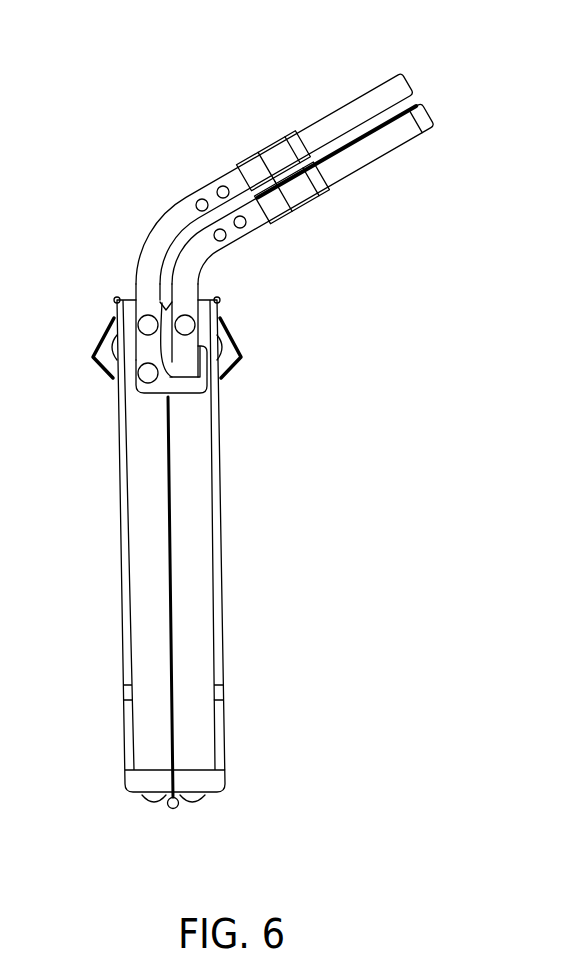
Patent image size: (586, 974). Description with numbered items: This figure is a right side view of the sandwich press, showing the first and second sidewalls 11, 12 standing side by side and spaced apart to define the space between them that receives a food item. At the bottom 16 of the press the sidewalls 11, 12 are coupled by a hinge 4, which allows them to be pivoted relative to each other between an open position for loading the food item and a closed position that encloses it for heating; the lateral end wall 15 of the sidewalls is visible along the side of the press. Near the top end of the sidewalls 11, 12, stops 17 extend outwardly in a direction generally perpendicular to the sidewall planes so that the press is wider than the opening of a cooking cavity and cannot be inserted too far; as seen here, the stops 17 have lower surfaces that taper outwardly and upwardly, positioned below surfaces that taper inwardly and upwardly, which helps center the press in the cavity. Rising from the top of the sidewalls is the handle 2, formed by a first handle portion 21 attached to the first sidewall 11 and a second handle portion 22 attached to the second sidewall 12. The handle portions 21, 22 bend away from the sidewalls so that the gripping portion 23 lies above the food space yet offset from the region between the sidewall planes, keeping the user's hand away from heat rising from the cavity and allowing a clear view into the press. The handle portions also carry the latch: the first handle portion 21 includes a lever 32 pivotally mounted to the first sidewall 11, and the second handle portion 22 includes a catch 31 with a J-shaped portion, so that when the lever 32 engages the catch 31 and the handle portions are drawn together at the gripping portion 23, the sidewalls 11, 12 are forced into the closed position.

The handle 2 is at (319, 195).
The second handle portion 22 is at (303, 132).
The first handle portion 21 is at (353, 172).
The gripping portion 23 is at (447, 140).
The lever 32 is at (188, 347).
The catch 31 is at (197, 387).
The stops 17 is at (97, 360).
The second sidewall 12 is at (100, 552).
The first sidewall 11 is at (240, 549).
The end wall 15 is at (193, 602).
The bottom 16 is at (130, 826).
The hinge 4 is at (178, 811).